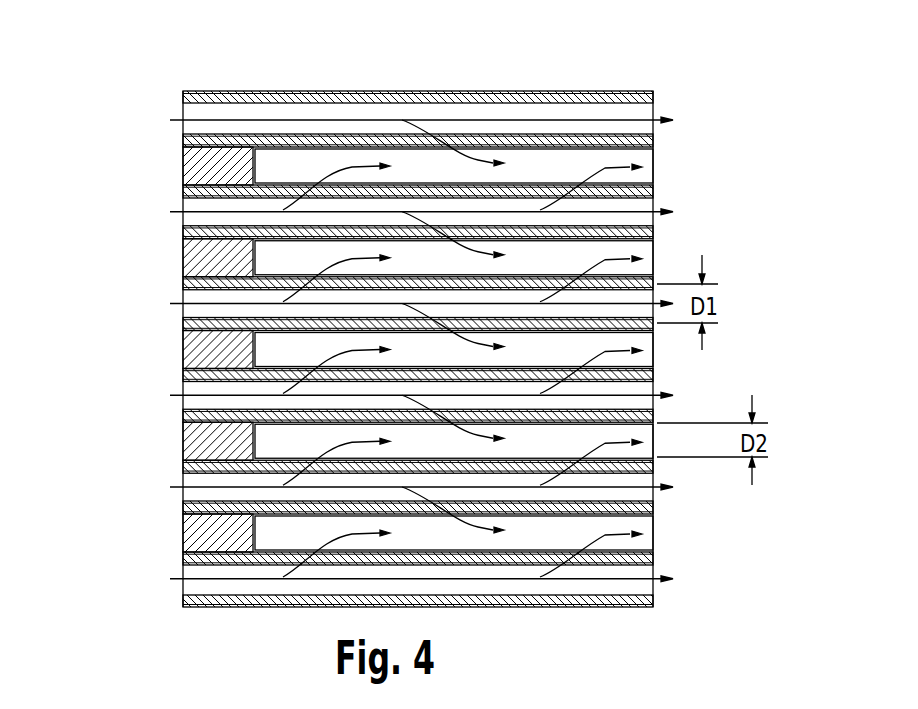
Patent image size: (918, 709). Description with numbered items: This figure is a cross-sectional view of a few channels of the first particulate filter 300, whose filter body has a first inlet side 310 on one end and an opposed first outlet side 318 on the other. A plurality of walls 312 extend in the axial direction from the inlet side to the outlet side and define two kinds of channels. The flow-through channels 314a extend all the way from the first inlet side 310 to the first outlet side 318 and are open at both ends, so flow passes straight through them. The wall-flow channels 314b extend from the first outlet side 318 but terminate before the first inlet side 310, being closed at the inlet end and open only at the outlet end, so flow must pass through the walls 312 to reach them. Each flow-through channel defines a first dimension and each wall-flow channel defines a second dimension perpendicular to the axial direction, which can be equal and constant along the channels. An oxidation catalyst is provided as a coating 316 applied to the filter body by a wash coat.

The first particulate filter 300 is at (562, 54).
The first inlet side 310 is at (144, 152).
The walls 312 is at (381, 135).
The flow-through channels 314a is at (463, 192).
The wall-flow channels 314b is at (570, 255).
The coating 316 is at (645, 182).
The first outlet side 318 is at (700, 106).